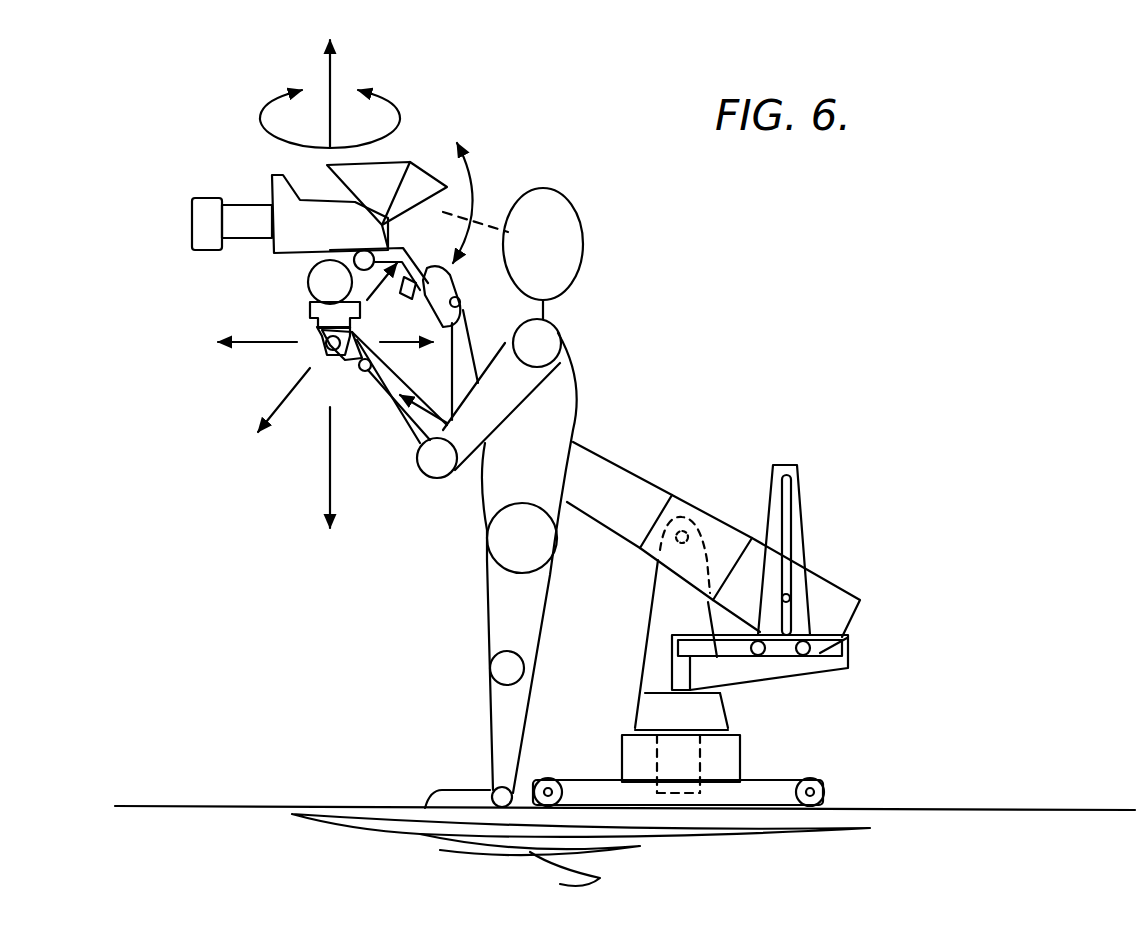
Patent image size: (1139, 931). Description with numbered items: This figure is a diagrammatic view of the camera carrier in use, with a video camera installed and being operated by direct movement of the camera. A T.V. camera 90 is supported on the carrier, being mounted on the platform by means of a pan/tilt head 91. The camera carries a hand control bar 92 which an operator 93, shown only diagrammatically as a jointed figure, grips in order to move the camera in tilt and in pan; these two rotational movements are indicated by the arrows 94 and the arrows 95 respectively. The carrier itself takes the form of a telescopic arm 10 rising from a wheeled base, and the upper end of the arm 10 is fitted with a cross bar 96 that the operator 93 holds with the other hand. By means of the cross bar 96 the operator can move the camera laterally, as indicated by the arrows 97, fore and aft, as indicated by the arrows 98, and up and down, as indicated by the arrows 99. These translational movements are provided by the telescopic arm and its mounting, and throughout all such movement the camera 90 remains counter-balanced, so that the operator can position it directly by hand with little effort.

The arm 10 is at (648, 457).
The T.V. camera 90 is at (283, 203).
The pan/tilt head 91 is at (317, 278).
The hand control bar 92 is at (407, 250).
The operator 93 is at (563, 380).
The arrows 94 is at (473, 163).
The arrows 95 is at (393, 102).
The cross bar 96 is at (323, 357).
The arrows 97 is at (280, 400).
The arrows 98 is at (250, 343).
The arrows 99 is at (327, 492).